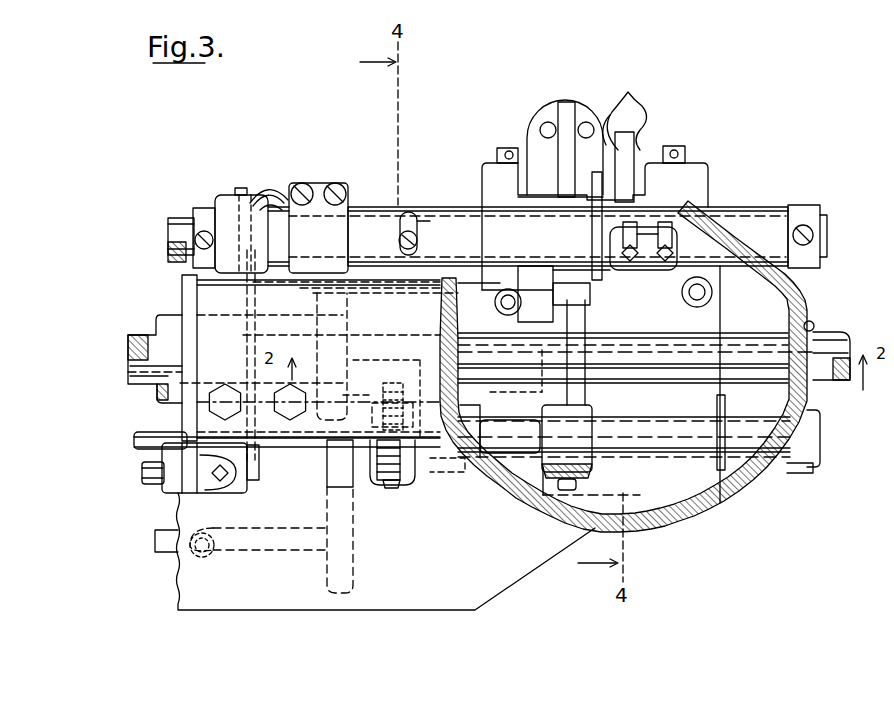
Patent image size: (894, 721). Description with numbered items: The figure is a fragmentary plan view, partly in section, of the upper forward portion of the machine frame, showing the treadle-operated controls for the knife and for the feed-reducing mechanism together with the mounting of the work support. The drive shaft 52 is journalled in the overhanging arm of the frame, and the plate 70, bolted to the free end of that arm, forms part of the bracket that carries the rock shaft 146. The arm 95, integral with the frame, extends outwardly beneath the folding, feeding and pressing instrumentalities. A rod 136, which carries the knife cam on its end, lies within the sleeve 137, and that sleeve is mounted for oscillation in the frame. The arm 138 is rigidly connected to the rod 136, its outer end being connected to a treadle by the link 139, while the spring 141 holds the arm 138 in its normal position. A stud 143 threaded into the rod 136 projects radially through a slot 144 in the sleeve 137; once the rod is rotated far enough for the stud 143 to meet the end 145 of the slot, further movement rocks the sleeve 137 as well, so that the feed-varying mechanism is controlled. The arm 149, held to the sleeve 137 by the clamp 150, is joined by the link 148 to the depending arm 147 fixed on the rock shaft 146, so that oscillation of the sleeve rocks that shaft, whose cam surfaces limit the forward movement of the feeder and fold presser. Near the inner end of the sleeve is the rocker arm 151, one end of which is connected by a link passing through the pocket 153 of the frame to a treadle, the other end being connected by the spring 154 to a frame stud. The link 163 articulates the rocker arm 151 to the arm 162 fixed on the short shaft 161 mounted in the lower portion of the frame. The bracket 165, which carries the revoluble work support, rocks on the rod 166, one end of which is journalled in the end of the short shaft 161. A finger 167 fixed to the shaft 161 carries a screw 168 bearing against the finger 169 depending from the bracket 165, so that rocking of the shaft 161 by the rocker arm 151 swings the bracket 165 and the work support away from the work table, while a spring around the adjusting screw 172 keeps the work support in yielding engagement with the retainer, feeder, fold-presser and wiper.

The drive shaft 52 is at (140, 366).
The plate 70 is at (182, 280).
The arm 95 is at (478, 592).
The rod 136 is at (170, 226).
The sleeve 137 is at (456, 207).
The arm 138 is at (634, 162).
The link 139 is at (631, 99).
The spring 141 is at (710, 303).
The stud 143 is at (419, 240).
The slot 144 is at (419, 223).
The end of the slot 145 is at (407, 212).
The rock shaft 146 is at (143, 480).
The depending arm 147 is at (260, 480).
The link 148 is at (247, 285).
The arm 149 is at (272, 190).
The clamp 150 is at (322, 192).
The rocker arm 151 is at (566, 102).
The pocket 153 is at (543, 118).
The spring 154 is at (496, 308).
The short shaft 161 is at (658, 460).
The arm 162 is at (586, 401).
The link 163 is at (560, 302).
The bracket 165 is at (358, 522).
The rod 166 is at (134, 440).
The finger 167 is at (416, 474).
The screw 168 is at (402, 490).
The finger 169 is at (358, 414).
The adjusting screw 172 is at (214, 551).